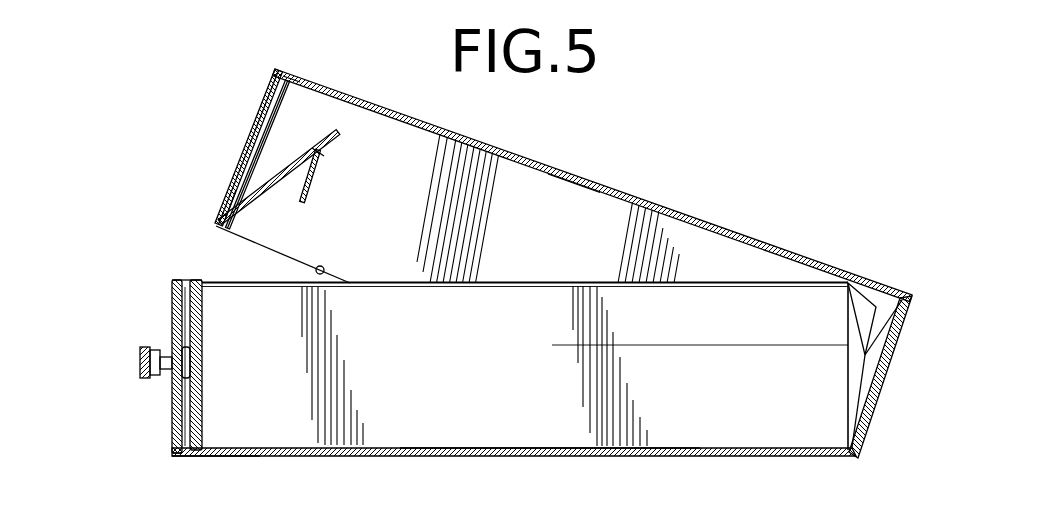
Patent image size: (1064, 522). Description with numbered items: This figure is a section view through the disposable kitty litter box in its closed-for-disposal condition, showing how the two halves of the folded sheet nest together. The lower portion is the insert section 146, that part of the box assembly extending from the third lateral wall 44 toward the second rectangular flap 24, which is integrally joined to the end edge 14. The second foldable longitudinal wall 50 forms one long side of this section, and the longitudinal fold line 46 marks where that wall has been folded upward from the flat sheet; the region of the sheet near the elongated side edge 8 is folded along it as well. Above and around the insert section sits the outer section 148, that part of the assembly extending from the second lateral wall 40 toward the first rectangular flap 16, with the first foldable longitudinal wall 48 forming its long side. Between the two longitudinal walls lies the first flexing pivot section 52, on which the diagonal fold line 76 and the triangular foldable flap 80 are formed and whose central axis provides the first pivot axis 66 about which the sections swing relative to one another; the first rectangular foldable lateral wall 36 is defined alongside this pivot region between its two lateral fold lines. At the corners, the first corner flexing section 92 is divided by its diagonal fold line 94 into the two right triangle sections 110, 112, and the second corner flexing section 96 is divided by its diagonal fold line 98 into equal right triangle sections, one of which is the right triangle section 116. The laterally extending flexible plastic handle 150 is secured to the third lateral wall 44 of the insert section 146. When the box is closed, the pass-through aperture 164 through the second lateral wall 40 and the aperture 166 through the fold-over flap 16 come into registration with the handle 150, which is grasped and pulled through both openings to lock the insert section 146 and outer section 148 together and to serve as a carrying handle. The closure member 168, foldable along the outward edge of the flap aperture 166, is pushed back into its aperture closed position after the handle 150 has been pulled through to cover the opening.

The elongated side edge 8 is at (380, 283).
The end edge 14 is at (200, 437).
The first rectangular flap 16 is at (320, 153).
The second rectangular flap 24 is at (202, 413).
The first rectangular foldable lateral wall 36 is at (880, 370).
The second rectangular foldable lateral wall 40 is at (267, 100).
The third rectangular foldable lateral wall 44 is at (172, 413).
The longitudinally extending fold line 46 is at (515, 167).
The first rectangular foldable longitudinal wall 48 is at (578, 217).
The second rectangular foldable longitudinal wall 50 is at (465, 432).
The first flexing pivot section 52 is at (870, 380).
The first pivot axis 66 is at (866, 352).
The diagonal fold line 76 is at (855, 398).
The triangular foldable flap 80 is at (868, 330).
The first corner flexing section 92 is at (297, 78).
The diagonal fold line 94 is at (230, 195).
The second corner flexing section 96 is at (172, 312).
The diagonal fold line 98 is at (177, 430).
The right triangle section 110 is at (267, 138).
The right triangle section 112 is at (237, 177).
The right triangle section 116 is at (173, 437).
The insert section 146 is at (560, 438).
The outer section 148 is at (617, 210).
The flexible plastic handle 150 is at (142, 350).
The pass-through aperture 164 is at (243, 145).
The aperture 166 is at (283, 178).
The closure member 168 is at (308, 177).